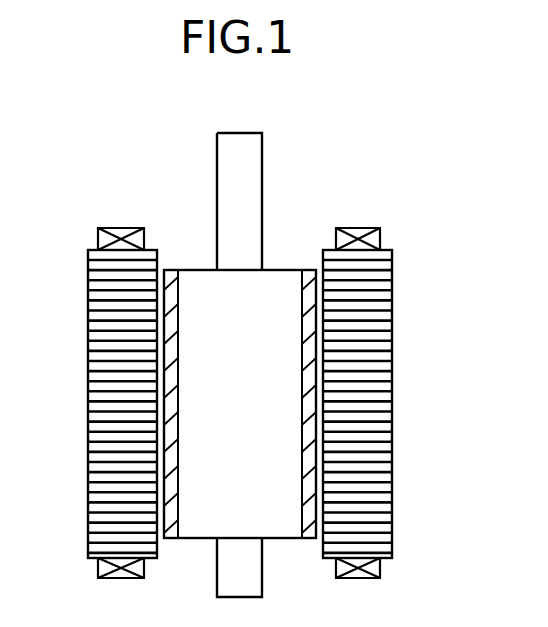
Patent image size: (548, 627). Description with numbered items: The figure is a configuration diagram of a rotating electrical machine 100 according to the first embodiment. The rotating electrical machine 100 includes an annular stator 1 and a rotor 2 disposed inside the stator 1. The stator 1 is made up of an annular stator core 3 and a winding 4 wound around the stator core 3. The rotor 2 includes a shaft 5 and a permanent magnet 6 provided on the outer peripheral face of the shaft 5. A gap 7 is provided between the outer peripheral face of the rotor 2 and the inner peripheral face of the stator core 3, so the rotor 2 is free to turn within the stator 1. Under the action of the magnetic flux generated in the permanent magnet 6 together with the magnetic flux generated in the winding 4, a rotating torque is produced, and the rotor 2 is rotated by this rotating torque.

The rotating electrical machine 100 is at (368, 123).
The stator 1 is at (284, 403).
The rotor 2 is at (254, 403).
The stator core 3 is at (370, 437).
The winding 4 is at (370, 568).
The shaft 5 is at (240, 159).
The permanent magnet 6 is at (312, 323).
The gap 7 is at (164, 398).